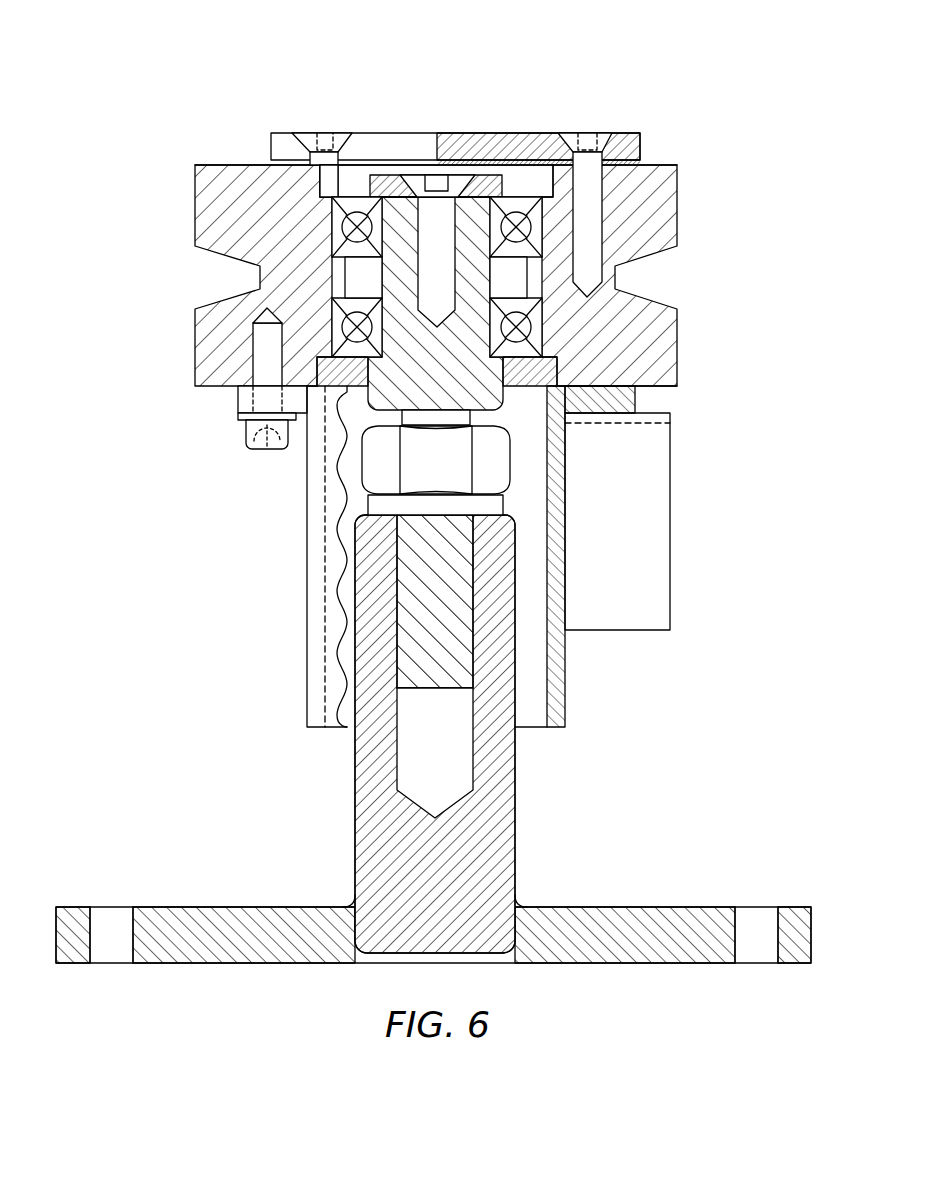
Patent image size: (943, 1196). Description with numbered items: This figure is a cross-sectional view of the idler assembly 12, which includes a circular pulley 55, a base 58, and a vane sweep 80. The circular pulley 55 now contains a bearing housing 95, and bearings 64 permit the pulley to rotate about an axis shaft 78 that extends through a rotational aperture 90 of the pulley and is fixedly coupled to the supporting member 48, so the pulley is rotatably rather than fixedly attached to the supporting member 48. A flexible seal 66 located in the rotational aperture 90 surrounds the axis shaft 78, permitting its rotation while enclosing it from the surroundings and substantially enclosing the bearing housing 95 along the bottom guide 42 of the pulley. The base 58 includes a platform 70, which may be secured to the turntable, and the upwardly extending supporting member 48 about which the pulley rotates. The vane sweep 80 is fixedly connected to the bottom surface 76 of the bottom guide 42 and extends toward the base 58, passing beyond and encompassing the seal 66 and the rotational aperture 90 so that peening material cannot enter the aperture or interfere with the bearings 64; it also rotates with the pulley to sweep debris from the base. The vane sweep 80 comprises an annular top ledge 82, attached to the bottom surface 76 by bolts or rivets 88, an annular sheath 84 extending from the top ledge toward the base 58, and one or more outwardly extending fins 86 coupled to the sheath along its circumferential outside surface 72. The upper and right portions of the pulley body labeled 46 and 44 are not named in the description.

The idler assembly 12 is at (177, 88).
The bottom guide 42 is at (195, 343).
The right clamp block 44 is at (671, 282).
The upper clamp block 46 is at (195, 200).
The supporting member 48 is at (505, 785).
The circular pulley 55 is at (174, 272).
The base 58 is at (256, 845).
The bearings 64 is at (358, 210).
The flexible seal 66 is at (327, 368).
The platform 70 is at (680, 907).
The circumferential outside surface 72 is at (562, 662).
The bottom surface 76 is at (668, 390).
The axis shaft 78 is at (470, 284).
The vane sweep 80 is at (294, 582).
The annular top ledge 82 is at (655, 413).
The annular sheath 84 is at (565, 698).
The outwardly extending fin 86 is at (655, 570).
The bolts or rivets 88 is at (258, 452).
The rotational aperture 90 is at (333, 372).
The bearing housing 95 is at (277, 197).